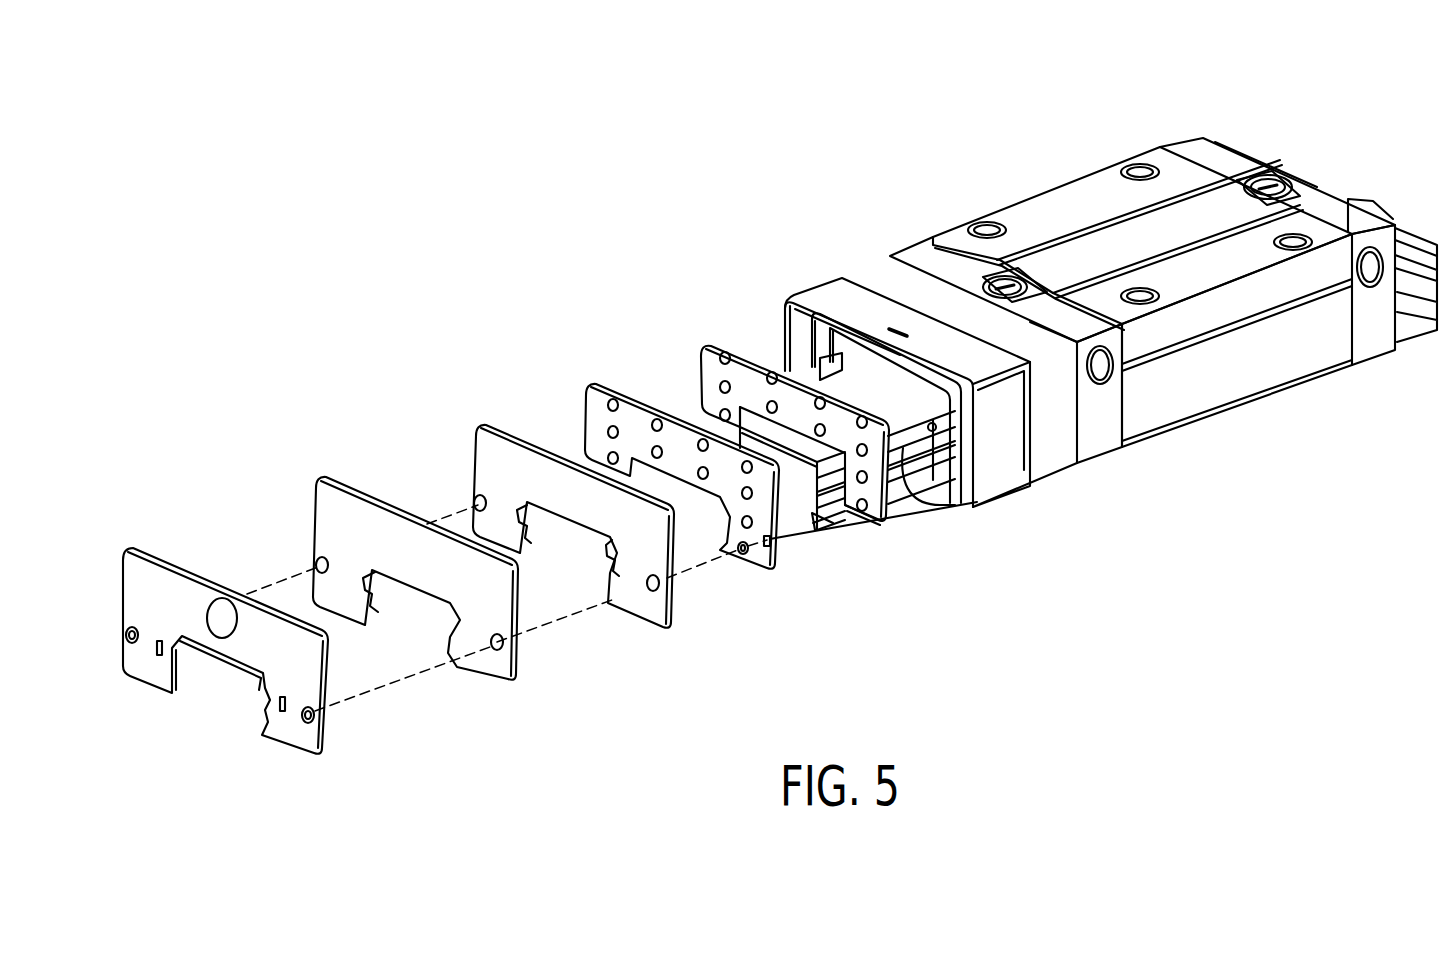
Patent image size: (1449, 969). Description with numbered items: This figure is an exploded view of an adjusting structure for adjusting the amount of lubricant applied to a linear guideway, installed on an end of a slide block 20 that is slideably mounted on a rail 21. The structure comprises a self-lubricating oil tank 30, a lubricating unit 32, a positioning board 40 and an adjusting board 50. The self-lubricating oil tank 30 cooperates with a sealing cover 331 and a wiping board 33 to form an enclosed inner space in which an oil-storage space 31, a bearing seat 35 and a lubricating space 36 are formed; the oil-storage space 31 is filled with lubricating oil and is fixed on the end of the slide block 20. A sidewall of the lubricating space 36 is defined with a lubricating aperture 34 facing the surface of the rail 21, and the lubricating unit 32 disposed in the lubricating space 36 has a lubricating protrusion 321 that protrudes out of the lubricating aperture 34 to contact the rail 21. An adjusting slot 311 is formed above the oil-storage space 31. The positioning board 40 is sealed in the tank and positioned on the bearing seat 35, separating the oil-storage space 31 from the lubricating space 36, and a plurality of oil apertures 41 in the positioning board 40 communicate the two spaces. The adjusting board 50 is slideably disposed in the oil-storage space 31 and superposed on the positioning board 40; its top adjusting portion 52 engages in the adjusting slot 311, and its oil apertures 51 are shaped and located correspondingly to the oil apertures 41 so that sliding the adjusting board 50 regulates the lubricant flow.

The slide block 20 is at (1182, 228).
The rail 21 is at (858, 508).
The self-lubricating oil tank 30 is at (883, 371).
The oil-storage space 31 is at (985, 418).
The adjusting slot 311 is at (903, 326).
The lubricating aperture 34 is at (950, 492).
The bearing seat 35 is at (892, 383).
The lubricating space 36 is at (787, 325).
The positioning board 40 is at (682, 519).
The oil apertures 41 is at (738, 552).
The adjusting board 50 is at (870, 519).
The oil apertures 51 is at (815, 529).
The adjusting portion 52 is at (771, 456).
The lubricating unit 32 is at (573, 565).
The lubricating protrusion 321 is at (605, 557).
The wiping board 33 is at (291, 733).
The sealing cover 331 is at (478, 667).